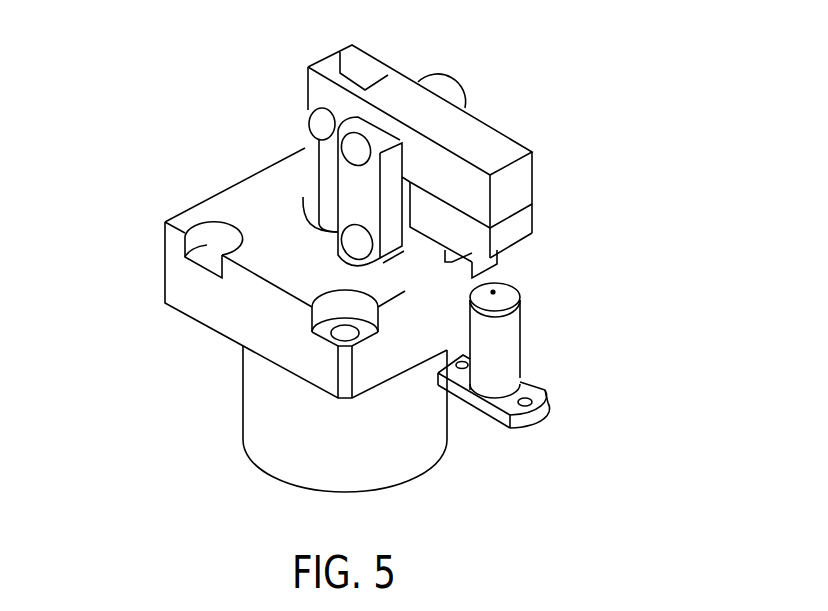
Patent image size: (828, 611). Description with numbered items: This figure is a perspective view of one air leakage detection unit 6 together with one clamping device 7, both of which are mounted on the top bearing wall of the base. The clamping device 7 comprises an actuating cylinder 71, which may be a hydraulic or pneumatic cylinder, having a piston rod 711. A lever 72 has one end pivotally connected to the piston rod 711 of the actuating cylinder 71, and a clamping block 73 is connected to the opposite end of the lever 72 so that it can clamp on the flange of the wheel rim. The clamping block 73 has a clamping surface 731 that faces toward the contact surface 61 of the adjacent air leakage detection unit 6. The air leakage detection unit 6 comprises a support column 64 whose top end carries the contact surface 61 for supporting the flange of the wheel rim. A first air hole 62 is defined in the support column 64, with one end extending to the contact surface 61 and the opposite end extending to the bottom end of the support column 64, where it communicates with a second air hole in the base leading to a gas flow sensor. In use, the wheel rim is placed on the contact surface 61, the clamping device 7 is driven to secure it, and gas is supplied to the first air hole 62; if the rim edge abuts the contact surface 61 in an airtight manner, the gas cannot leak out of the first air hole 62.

The clamping device 7 is at (212, 192).
The actuating cylinder 71 is at (235, 313).
The piston rod 711 is at (328, 172).
The lever 72 is at (462, 127).
The clamping block 73 is at (515, 230).
The clamping surface 731 is at (507, 252).
The air leakage detection unit 6 is at (555, 410).
The contact surface 61 is at (503, 297).
The first air hole 62 is at (495, 292).
The support column 64 is at (493, 380).